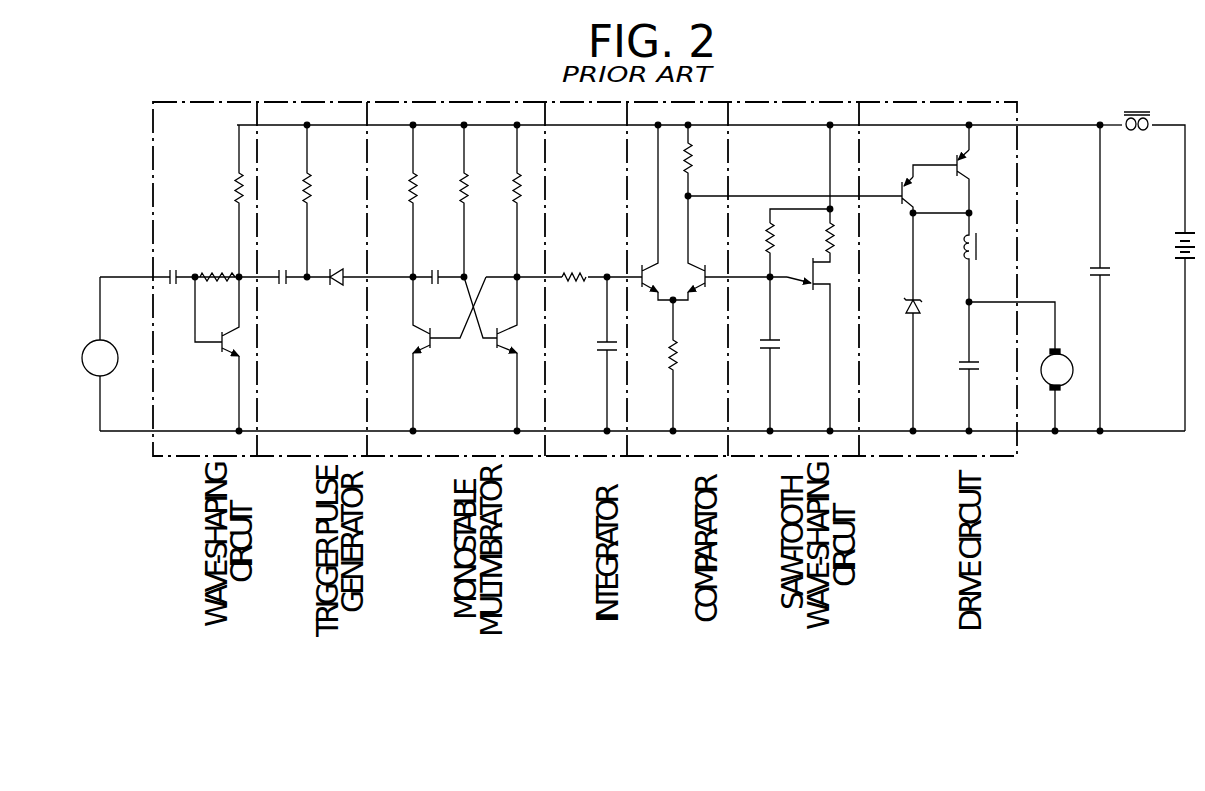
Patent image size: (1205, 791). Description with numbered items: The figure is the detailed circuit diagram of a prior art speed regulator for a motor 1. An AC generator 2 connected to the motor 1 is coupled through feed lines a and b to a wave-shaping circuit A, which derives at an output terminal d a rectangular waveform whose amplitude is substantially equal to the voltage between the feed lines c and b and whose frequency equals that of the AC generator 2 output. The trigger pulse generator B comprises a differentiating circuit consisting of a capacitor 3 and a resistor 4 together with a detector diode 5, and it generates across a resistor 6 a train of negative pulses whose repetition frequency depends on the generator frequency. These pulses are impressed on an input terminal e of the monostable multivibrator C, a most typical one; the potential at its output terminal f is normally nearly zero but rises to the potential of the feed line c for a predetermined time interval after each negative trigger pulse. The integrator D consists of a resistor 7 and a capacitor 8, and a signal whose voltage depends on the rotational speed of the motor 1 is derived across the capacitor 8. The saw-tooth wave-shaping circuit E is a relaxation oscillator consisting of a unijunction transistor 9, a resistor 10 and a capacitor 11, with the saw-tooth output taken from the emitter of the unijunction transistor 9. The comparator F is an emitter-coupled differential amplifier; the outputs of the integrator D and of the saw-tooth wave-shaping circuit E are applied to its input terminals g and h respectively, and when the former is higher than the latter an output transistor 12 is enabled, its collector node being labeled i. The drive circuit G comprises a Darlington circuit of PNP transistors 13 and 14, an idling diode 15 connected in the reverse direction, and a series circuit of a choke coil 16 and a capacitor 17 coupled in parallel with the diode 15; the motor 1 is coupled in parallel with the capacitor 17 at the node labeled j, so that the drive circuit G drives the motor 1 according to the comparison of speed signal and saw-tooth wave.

The motor 1 is at (1066, 355).
The AC generator 2 is at (88, 371).
The capacitor 3 is at (283, 290).
The resistor 4 is at (310, 188).
The diode 5 is at (334, 290).
The resistor 6 is at (414, 186).
The resistor 7 is at (575, 290).
The capacitor 8 is at (598, 346).
The unijunction transistor 9 is at (818, 293).
The resistor 10 is at (768, 236).
The capacitor 11 is at (781, 346).
The output transistor 12 is at (705, 264).
The PNP transistor 13 is at (911, 206).
The PNP transistor 14 is at (963, 164).
The idling diode 15 is at (919, 312).
The choke coil 16 is at (962, 247).
The capacitor 17 is at (960, 366).
The feed line a is at (98, 277).
The feed line b is at (173, 430).
The feed line c is at (237, 125).
The output terminal d is at (239, 277).
The input terminal e is at (412, 280).
The output terminal f is at (517, 277).
The input terminal g is at (607, 277).
The input terminal h is at (768, 281).
The comparator output point i is at (689, 196).
The drive circuit output point j is at (1036, 302).
The wave-shaping circuit A is at (174, 457).
The trigger pulse generator B is at (279, 457).
The monostable multivibrator C is at (390, 457).
The integrator D is at (560, 457).
The saw-tooth wave-shaping circuit E is at (750, 457).
The comparator F is at (650, 457).
The drive circuit G is at (885, 457).